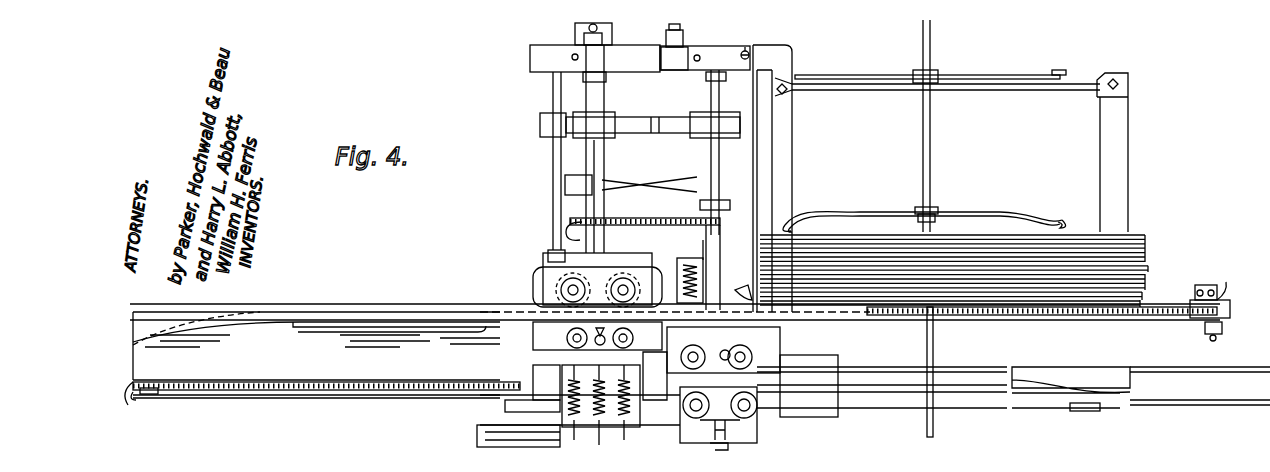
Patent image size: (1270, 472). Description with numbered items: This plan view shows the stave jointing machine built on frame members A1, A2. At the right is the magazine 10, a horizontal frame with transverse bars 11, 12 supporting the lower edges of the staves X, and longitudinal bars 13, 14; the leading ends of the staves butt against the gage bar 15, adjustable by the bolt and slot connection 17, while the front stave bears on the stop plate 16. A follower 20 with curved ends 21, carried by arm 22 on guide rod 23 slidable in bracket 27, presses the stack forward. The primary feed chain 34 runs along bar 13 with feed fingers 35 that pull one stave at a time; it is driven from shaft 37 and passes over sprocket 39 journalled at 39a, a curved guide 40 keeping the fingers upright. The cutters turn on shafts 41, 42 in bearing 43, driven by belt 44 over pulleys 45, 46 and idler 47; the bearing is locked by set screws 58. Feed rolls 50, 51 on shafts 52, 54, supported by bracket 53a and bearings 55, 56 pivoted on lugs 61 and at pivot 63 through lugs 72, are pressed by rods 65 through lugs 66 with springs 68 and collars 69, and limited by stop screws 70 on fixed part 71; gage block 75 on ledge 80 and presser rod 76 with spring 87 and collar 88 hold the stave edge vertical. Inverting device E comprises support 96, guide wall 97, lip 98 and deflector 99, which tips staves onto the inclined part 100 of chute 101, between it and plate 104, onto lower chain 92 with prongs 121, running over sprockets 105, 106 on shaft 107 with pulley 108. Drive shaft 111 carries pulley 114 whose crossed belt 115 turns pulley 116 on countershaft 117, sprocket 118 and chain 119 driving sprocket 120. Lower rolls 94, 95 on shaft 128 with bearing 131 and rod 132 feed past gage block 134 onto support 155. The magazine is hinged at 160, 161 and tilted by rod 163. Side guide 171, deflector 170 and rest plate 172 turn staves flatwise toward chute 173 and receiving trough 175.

The magazine 10 is at (1157, 137).
The transverse spaced bar 11 is at (1105, 142).
The transverse spaced bar 12 is at (775, 165).
The front longitudinal bar 13 is at (1192, 325).
The rear longitudinal bar 14 is at (977, 84).
The gage bar 15 is at (765, 125).
The stop plate 16 is at (905, 320).
The bolt and slot connection 17 is at (758, 47).
The follower 20 is at (884, 210).
The curved ends 21 is at (798, 225).
The vertical supporting arm 22 is at (938, 207).
The horizontal guide rod 23 is at (933, 345).
The rear bracket 27 is at (938, 72).
The endless chain 34 is at (1088, 316).
The feed fingers 35 is at (866, 318).
The shaft 37 is at (706, 232).
The sprocket 39 is at (1230, 310).
The journal 39a is at (1224, 328).
The curved guide plate 40 is at (1220, 279).
The cutter shaft 41 is at (600, 145).
The cutter shaft 42 is at (711, 97).
The bearing 43 is at (585, 75).
The belt 44 is at (662, 135).
The pulley 45 is at (600, 115).
The pulley 46 is at (705, 140).
The idler 47 is at (553, 137).
The feed roll 50 is at (595, 300).
The feed roll 51 is at (600, 389).
The roll shaft 52 is at (563, 290).
The bracket 53a is at (585, 272).
The roll shaft 54 is at (560, 340).
The upper bearing 55 is at (548, 328).
The lower bearing 56 is at (600, 45).
The set screw 58 is at (577, 50).
The fixed lugs 61 is at (680, 395).
The block 63 is at (680, 380).
The horizontal rods 65 is at (640, 440).
The lugs 66 is at (660, 430).
The coil springs 68 is at (545, 427).
The adjustable collars 69 is at (560, 402).
The stop screws 70 is at (568, 334).
The fixed frame part 71 is at (540, 310).
The offset interfitting lugs 72 is at (605, 335).
The gage block 75 is at (675, 313).
The presser rod 76 is at (595, 440).
The ledge 80 is at (538, 268).
The coil spring 87 is at (575, 428).
The collar 88 is at (607, 405).
The lower feed chain 92 is at (368, 392).
The lower feed roll 94 is at (804, 405).
The lower feed roll 95 is at (809, 384).
The stave support 96 is at (378, 322).
The side guide wall 97 is at (330, 312).
The lip 98 is at (412, 329).
The deflector 99 is at (160, 316).
The inclined plate part 100 is at (316, 340).
The guide plate 101 is at (133, 398).
The vertical plate 104 is at (288, 392).
The sprocket 105 is at (160, 392).
The sprocket 106 is at (500, 370).
The shaft 107 is at (505, 408).
The pulley 108 is at (477, 426).
The drive shaft 111 is at (778, 215).
The pulley 114 is at (778, 155).
The crossed belt 115 is at (622, 184).
The pulley 116 is at (568, 195).
The countershaft 117 is at (585, 200).
The sprocket wheel 118 is at (583, 236).
The sprocket chain 119 is at (630, 218).
The sprocket 120 is at (692, 214).
The feed fingers 121 is at (272, 395).
The roll shaft 128 is at (718, 418).
The upper bearing 131 is at (770, 340).
The spring-pressed rod 132 is at (703, 246).
The gage block 134 is at (760, 377).
The support 155 is at (882, 401).
The hinge 160 is at (682, 303).
The hinge 161 is at (668, 48).
The adjusting rod 163 is at (860, 75).
The deflector 170 is at (1110, 370).
The upright side guide 171 is at (998, 368).
The rest plate 172 is at (1045, 385).
The inclined chute 173 is at (1200, 386).
The receiving magazine 175 is at (1070, 412).
The upright frame member A1 is at (795, 429).
The upright frame member A2 is at (522, 50).
The stave inverting device E is at (316, 375).
The staves X is at (1010, 250).